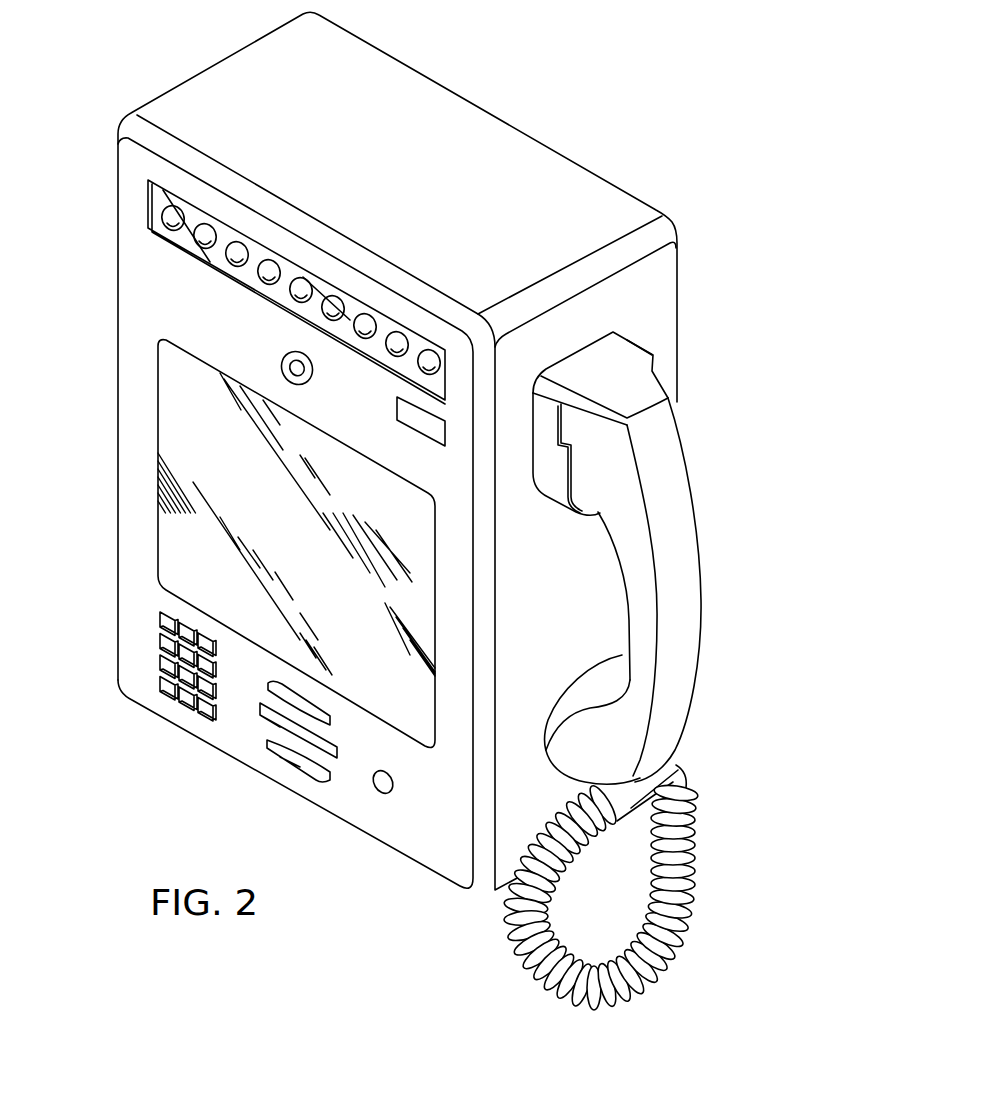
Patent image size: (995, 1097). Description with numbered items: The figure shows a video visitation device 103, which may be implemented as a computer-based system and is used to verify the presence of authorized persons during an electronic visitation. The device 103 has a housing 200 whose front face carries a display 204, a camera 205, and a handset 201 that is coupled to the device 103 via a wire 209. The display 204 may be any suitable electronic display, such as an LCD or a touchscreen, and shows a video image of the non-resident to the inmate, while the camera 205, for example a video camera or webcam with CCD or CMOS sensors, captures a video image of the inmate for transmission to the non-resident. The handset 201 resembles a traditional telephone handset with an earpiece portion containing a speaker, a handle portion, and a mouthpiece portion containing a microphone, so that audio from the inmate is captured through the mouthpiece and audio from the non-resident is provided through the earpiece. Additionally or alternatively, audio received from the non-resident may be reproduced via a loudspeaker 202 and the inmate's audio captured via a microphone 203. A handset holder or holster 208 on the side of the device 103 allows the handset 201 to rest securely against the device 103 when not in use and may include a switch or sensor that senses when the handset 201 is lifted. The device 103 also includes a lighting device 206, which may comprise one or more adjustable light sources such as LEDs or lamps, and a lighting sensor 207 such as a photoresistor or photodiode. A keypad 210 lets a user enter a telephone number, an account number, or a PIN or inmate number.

The video visitation device 103 is at (578, 82).
The housing 200 is at (118, 406).
The handset 201 is at (705, 597).
The loudspeaker 202 is at (263, 729).
The microphone 203 is at (378, 792).
The display 204 is at (174, 548).
The camera 205 is at (283, 364).
The lighting device 206 is at (148, 202).
The lighting sensor 207 is at (417, 433).
The handset holder 208 is at (563, 512).
The wire 209 is at (692, 873).
The keypad 210 is at (160, 686).